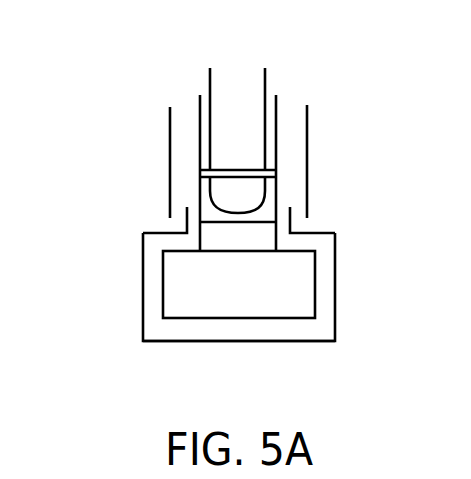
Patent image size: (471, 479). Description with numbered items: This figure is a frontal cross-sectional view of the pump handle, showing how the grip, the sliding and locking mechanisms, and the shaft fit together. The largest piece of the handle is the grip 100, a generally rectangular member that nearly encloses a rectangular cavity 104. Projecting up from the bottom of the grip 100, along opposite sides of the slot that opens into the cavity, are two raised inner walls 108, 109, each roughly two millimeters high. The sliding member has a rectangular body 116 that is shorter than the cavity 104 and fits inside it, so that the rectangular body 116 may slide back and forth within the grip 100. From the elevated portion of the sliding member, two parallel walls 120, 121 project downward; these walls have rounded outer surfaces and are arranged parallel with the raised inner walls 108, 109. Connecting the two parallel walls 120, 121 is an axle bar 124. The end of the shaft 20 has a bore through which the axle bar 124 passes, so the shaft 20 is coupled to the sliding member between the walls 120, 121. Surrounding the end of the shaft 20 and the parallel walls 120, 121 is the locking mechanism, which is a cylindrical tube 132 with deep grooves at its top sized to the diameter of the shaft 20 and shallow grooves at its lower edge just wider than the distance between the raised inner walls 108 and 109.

The shaft 20 is at (265, 80).
The cylindrical tube 132 is at (170, 118).
The parallel wall 120 is at (277, 157).
The axle bar 124 is at (227, 170).
The parallel wall 121 is at (200, 187).
The raised inner wall 109 is at (187, 221).
The raised inner wall 108 is at (293, 225).
The rectangular body 116 is at (175, 283).
The grip 100 is at (290, 342).
The rectangular cavity 104 is at (260, 335).